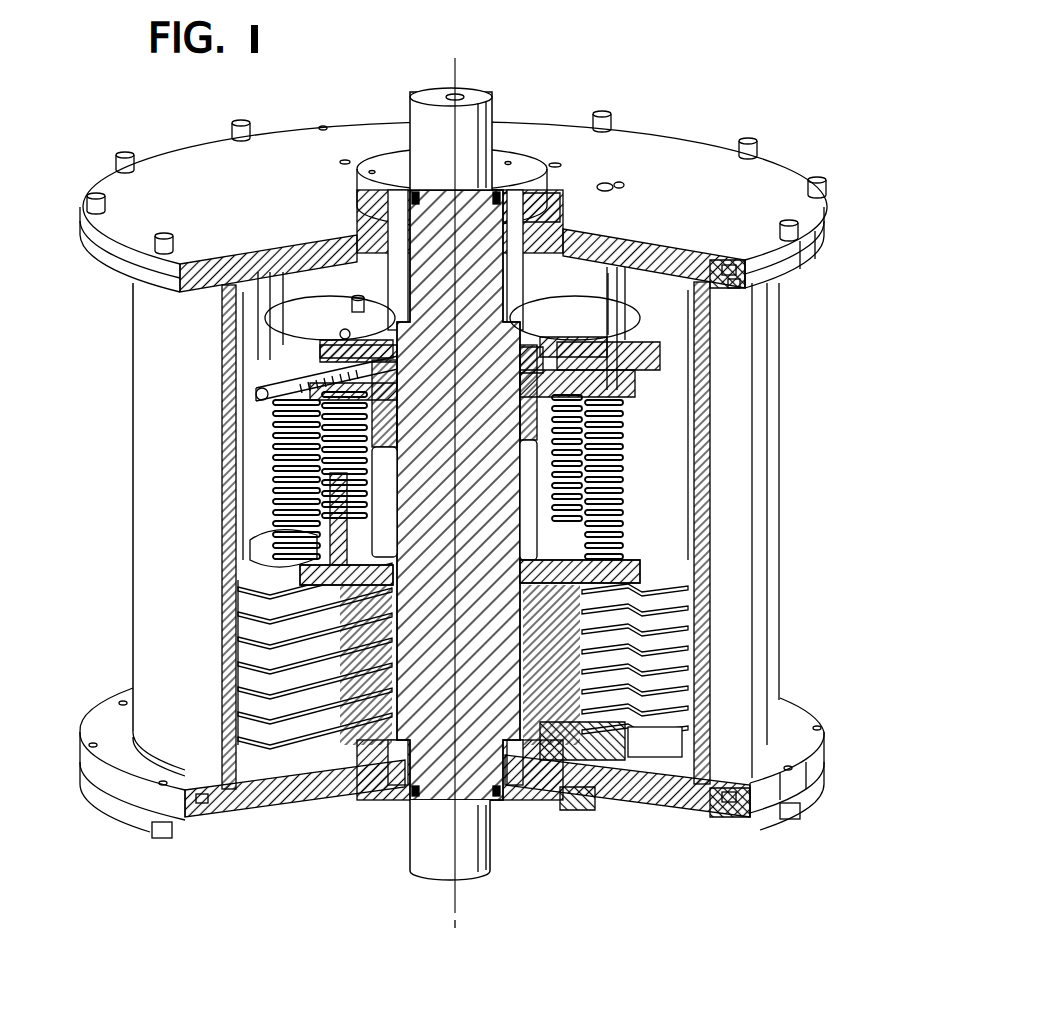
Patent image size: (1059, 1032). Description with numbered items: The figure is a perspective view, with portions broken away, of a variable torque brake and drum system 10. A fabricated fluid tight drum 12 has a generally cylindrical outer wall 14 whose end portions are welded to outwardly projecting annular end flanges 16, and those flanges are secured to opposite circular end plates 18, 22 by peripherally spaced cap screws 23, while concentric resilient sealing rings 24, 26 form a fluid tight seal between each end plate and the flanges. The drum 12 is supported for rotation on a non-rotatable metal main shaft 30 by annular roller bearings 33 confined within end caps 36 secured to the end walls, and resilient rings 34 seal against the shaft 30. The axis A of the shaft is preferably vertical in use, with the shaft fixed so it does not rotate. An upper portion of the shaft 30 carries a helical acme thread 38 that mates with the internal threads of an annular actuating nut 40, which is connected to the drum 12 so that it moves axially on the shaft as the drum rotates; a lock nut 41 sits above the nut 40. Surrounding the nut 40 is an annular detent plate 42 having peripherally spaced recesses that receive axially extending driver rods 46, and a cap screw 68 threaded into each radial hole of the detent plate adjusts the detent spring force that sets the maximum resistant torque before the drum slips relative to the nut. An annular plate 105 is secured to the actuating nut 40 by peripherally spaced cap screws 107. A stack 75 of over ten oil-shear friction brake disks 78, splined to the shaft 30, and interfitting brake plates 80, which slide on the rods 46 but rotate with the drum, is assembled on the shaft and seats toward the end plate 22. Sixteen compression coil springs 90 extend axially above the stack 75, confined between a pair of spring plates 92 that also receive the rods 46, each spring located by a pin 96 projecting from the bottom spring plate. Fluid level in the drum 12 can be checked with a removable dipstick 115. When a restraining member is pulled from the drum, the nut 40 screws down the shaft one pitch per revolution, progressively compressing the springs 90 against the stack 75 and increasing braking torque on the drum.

The variable torque brake and drum system 10 is at (750, 100).
The drum 12 is at (126, 455).
The outer wall 14 is at (230, 536).
The end flanges 16 is at (736, 288).
The end plate 18 is at (688, 152).
The end plate 22 is at (270, 790).
The cap screws 23 is at (818, 178).
The sealing ring 24 is at (706, 260).
The sealing ring 26 is at (733, 262).
The main shaft 30 is at (421, 90).
The roller bearings 33 is at (510, 238).
The resilient rings 34 is at (416, 194).
The end caps 36 is at (533, 156).
The helical thread 38 is at (520, 428).
The actuating nut 40 is at (530, 357).
The lock nut 41 is at (356, 296).
The detent plate 42 is at (632, 384).
The driver rods 46 is at (262, 292).
The cap screw 68 is at (272, 400).
The stack 75 is at (224, 653).
The friction brake disks 78 is at (396, 630).
The brake plates 80 is at (236, 706).
The compression coil springs 90 is at (620, 492).
The spring plates 92 is at (275, 420).
The pin 96 is at (275, 518).
The annular plate 105 is at (345, 312).
The cap screws 107 is at (338, 334).
The dipstick 115 is at (610, 190).
The axis A is at (455, 905).